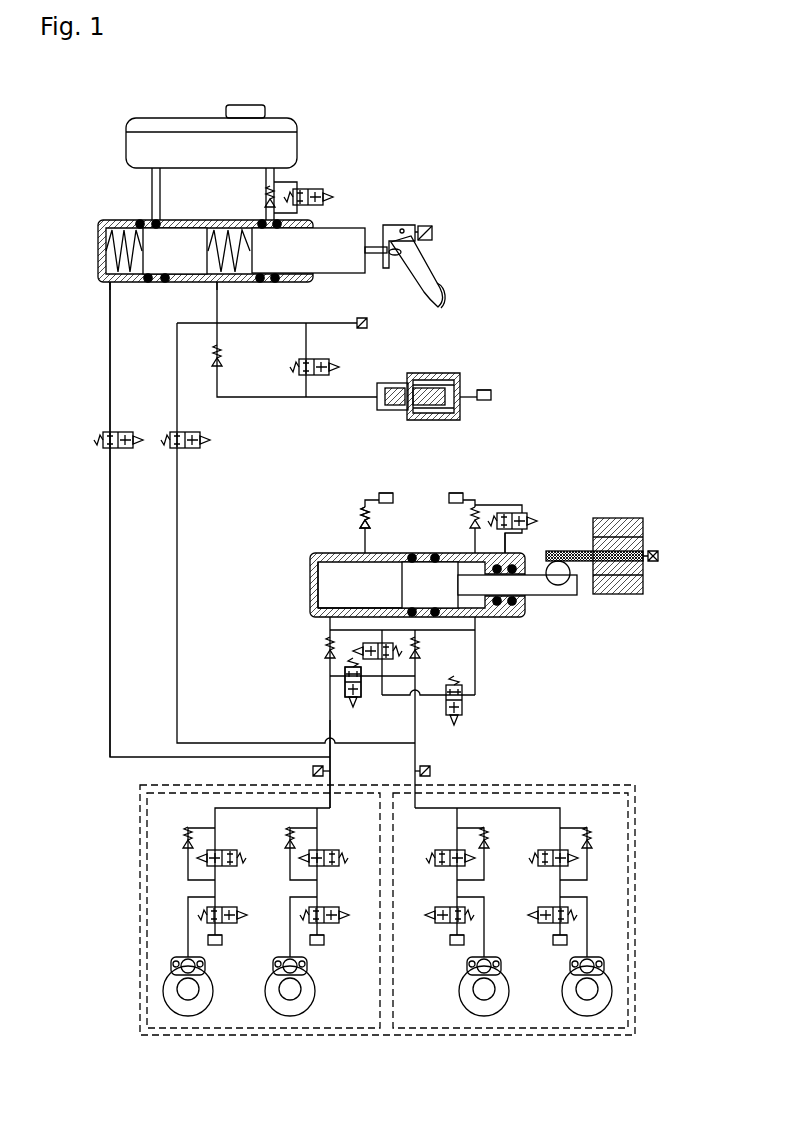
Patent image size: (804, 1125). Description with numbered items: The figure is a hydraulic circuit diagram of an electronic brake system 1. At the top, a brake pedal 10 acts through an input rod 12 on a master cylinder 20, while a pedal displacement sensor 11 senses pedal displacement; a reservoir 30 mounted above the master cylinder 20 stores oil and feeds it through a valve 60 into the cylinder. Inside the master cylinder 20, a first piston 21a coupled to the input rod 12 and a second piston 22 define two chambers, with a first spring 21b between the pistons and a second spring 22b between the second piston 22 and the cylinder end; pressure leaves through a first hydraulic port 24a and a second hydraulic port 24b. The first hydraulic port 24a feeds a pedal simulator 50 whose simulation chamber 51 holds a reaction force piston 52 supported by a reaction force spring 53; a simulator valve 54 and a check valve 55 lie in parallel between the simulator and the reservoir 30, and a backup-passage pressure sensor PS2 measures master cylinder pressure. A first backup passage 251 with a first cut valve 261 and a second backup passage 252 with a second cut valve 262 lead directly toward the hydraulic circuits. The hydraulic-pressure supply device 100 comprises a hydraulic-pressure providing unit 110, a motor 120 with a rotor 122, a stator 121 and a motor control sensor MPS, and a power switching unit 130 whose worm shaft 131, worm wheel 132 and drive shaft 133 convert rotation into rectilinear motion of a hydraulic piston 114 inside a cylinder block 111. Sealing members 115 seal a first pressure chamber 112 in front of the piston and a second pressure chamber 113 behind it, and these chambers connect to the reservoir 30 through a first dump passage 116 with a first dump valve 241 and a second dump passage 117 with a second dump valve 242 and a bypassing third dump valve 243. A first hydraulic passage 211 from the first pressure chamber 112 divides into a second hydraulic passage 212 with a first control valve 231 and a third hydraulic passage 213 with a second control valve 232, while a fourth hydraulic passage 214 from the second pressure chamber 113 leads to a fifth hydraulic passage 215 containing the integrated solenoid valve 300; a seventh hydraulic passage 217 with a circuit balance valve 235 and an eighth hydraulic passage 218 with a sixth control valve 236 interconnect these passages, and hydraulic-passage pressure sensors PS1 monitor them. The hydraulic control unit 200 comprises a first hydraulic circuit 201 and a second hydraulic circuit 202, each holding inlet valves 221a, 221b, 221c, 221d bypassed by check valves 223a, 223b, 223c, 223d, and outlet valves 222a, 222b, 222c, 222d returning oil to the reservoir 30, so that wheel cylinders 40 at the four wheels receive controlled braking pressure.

The electronic brake system 1 is at (117, 85).
The brake pedal 10 is at (425, 268).
The pedal displacement sensor 11 is at (428, 228).
The input rod 12 is at (378, 246).
The master cylinder 20 is at (208, 248).
The first piston 21a is at (334, 237).
The first spring 21b is at (244, 262).
The second piston 22 is at (185, 232).
The second spring 22b is at (106, 250).
The first hydraulic port 24a is at (214, 283).
The second hydraulic port 24b is at (100, 283).
The reservoir 30 is at (160, 118).
The wheel cylinder 40 is at (206, 964).
The pedal simulator 50 is at (427, 393).
The simulation chamber 51 is at (432, 374).
The reaction force piston 52 is at (398, 412).
The reaction force spring 53 is at (412, 386).
The simulator valve 54 is at (333, 360).
The check valve 55 is at (224, 356).
The inspection valve 60 is at (326, 190).
The hydraulic-pressure supply device 100 is at (302, 516).
The hydraulic-pressure providing unit 110 is at (412, 576).
The cylinder block 111 is at (318, 578).
The first pressure chamber 112 is at (330, 586).
The second pressure chamber 113 is at (505, 610).
The hydraulic piston 114 is at (445, 568).
The sealing member 115 is at (413, 555).
The first dump passage 116 is at (365, 545).
The second dump passage 117 is at (501, 543).
The motor 120 is at (642, 546).
The stator 121 is at (645, 588).
The rotor 122 is at (645, 568).
The power switching unit 130 is at (575, 562).
The worm shaft 131 is at (560, 550).
The worm wheel 132 is at (566, 583).
The drive shaft 133 is at (567, 597).
The hydraulic control unit 200 is at (462, 1068).
The first hydraulic circuit 201 is at (510, 932).
The second hydraulic circuit 202 is at (266, 932).
The first hydraulic passage 211 is at (328, 630).
The second hydraulic passage 212 is at (410, 631).
The third hydraulic passage 213 is at (328, 733).
The fourth hydraulic passage 214 is at (478, 632).
The fifth hydraulic passage 215 is at (478, 692).
The seventh hydraulic passage 217 is at (344, 677).
The eighth hydraulic passage 218 is at (380, 668).
The inlet valve 221a is at (540, 850).
The inlet valve 221b is at (436, 850).
The inlet valve 221c is at (338, 850).
The inlet valve 221d is at (236, 850).
The outlet valve 222a is at (540, 910).
The outlet valve 222b is at (437, 910).
The outlet valve 222c is at (338, 910).
The outlet valve 222d is at (236, 910).
The check valve 223a is at (590, 840).
The check valve 223b is at (486, 856).
The check valve 223c is at (290, 858).
The check valve 223d is at (186, 840).
The first control valve 231 is at (422, 650).
The second control valve 232 is at (324, 652).
The circuit balance valve 235 is at (345, 692).
The sixth control valve 236 is at (362, 651).
The first dump valve 241 is at (362, 520).
The second dump valve 242 is at (478, 508).
The third dump valve 243 is at (513, 512).
The first backup passage 251 is at (217, 315).
The second backup passage 252 is at (110, 320).
The first cut valve 261 is at (195, 434).
The second cut valve 262 is at (103, 444).
The integrated solenoid valve 300 is at (464, 710).
The hydraulic-passage pressure sensor PS1 is at (313, 774).
The backup-passage pressure sensor PS2 is at (367, 325).
The motor control sensor MPS is at (655, 550).